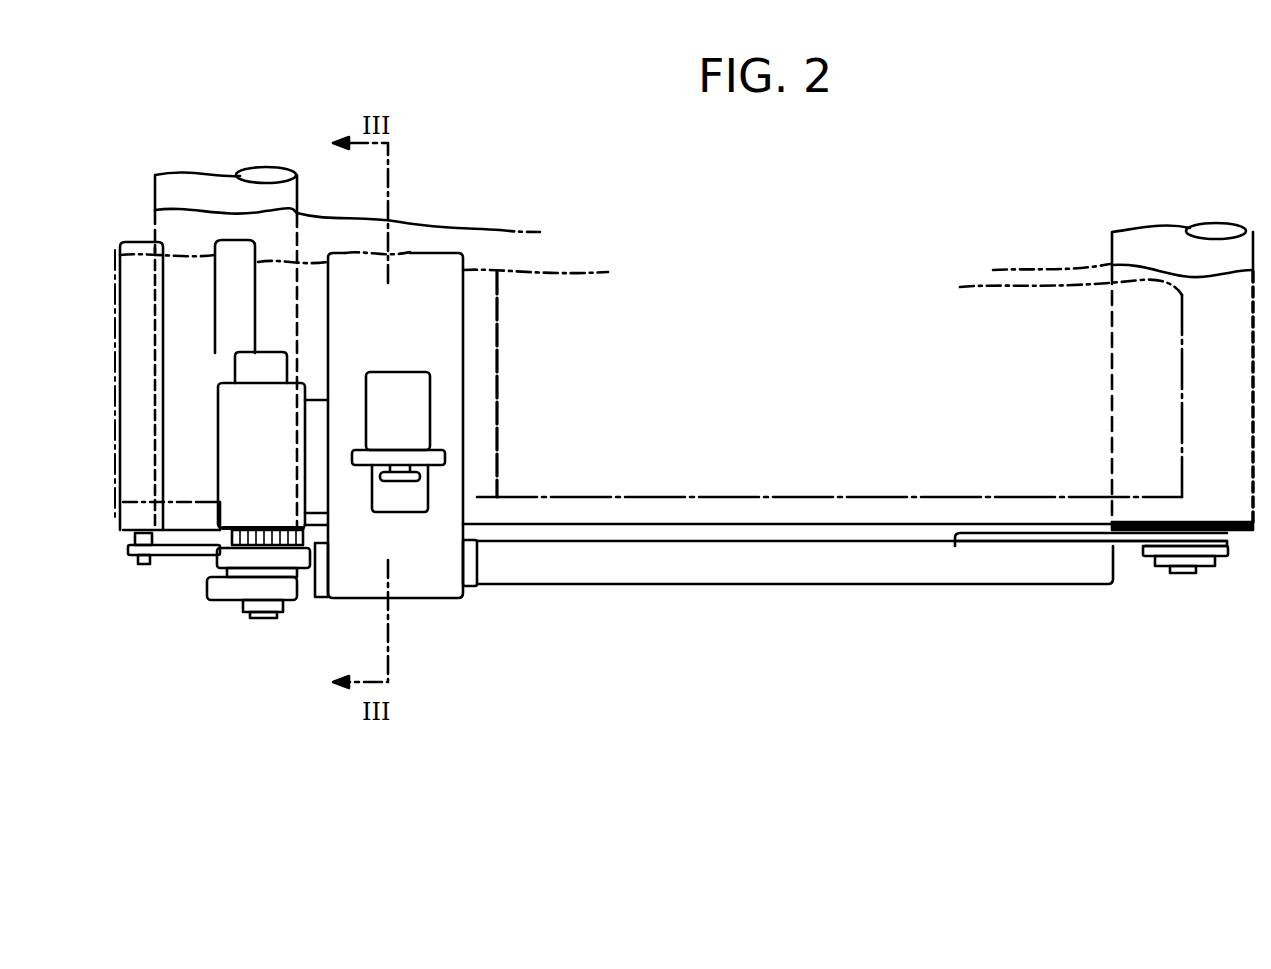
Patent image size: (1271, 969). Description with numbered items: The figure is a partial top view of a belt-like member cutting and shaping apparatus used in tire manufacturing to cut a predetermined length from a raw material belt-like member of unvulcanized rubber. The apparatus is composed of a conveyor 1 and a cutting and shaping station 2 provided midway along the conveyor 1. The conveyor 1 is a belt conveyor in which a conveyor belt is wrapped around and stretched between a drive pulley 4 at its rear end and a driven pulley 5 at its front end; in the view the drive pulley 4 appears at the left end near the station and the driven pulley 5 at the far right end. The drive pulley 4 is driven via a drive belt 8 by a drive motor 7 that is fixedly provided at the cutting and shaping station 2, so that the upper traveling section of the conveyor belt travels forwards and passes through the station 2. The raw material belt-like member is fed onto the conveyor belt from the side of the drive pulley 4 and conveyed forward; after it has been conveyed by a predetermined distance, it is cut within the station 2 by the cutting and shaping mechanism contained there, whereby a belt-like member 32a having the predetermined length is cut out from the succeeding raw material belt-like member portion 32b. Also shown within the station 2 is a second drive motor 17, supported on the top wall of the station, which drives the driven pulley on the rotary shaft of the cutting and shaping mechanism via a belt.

The conveyor 1 is at (669, 602).
The cutting and shaping station 2 is at (406, 249).
The drive pulley 4 is at (236, 182).
The driven pulley 5 is at (1160, 230).
The drive motor 7 is at (228, 432).
The drive belt 8 is at (248, 598).
The drive motor 17 is at (382, 372).
The belt-like member 32a is at (822, 498).
The succeeding raw material belt-like member portion 32b is at (200, 535).